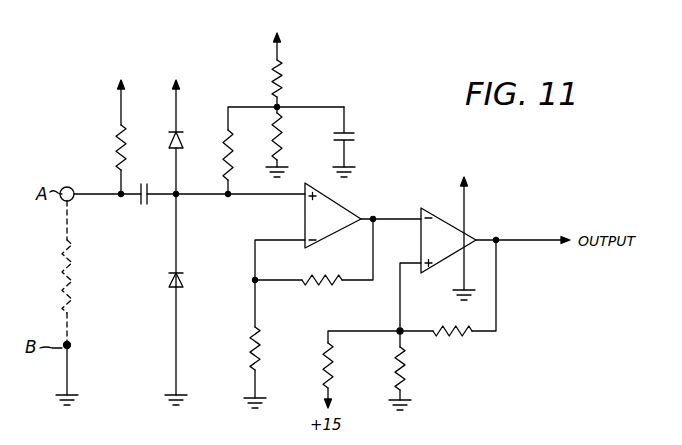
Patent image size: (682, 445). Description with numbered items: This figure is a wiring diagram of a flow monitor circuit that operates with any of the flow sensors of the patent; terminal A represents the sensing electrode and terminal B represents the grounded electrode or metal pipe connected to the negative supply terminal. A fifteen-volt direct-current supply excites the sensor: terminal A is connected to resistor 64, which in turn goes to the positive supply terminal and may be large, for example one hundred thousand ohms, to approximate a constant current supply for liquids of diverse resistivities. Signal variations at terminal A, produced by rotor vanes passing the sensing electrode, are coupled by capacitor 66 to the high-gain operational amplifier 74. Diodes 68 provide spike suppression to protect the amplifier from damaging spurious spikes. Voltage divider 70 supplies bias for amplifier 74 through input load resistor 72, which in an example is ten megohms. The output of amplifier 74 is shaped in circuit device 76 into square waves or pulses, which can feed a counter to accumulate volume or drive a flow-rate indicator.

The resistor 64 is at (117, 140).
The capacitor 66 is at (145, 207).
The diodes 68 is at (183, 140).
The voltage divider 70 is at (284, 69).
The input load resistor 72 is at (224, 122).
The high-gain operational amplifier 74 is at (354, 202).
The circuit device 76 is at (439, 203).